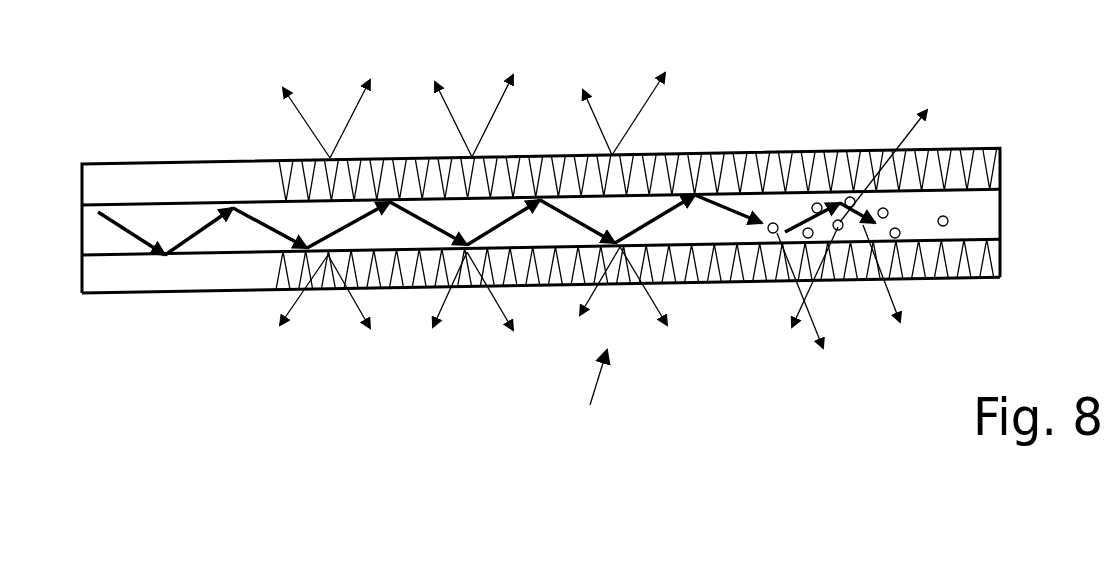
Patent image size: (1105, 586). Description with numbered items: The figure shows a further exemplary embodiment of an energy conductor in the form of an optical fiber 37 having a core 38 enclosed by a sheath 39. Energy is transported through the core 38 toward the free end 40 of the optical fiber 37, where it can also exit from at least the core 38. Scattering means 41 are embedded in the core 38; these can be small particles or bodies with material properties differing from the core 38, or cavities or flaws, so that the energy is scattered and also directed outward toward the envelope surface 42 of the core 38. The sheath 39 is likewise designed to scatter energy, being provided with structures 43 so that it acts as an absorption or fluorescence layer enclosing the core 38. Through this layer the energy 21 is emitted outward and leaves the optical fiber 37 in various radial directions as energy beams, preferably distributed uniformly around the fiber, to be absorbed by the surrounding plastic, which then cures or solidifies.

The light rays 21 is at (190, 230).
The optical fiber 37 is at (591, 394).
The core 38 is at (715, 225).
The sheath 39 is at (137, 283).
The free end 40 is at (1002, 215).
The scattering means 41 is at (945, 216).
The envelope surface 42 is at (212, 257).
The structures 43 is at (795, 157).